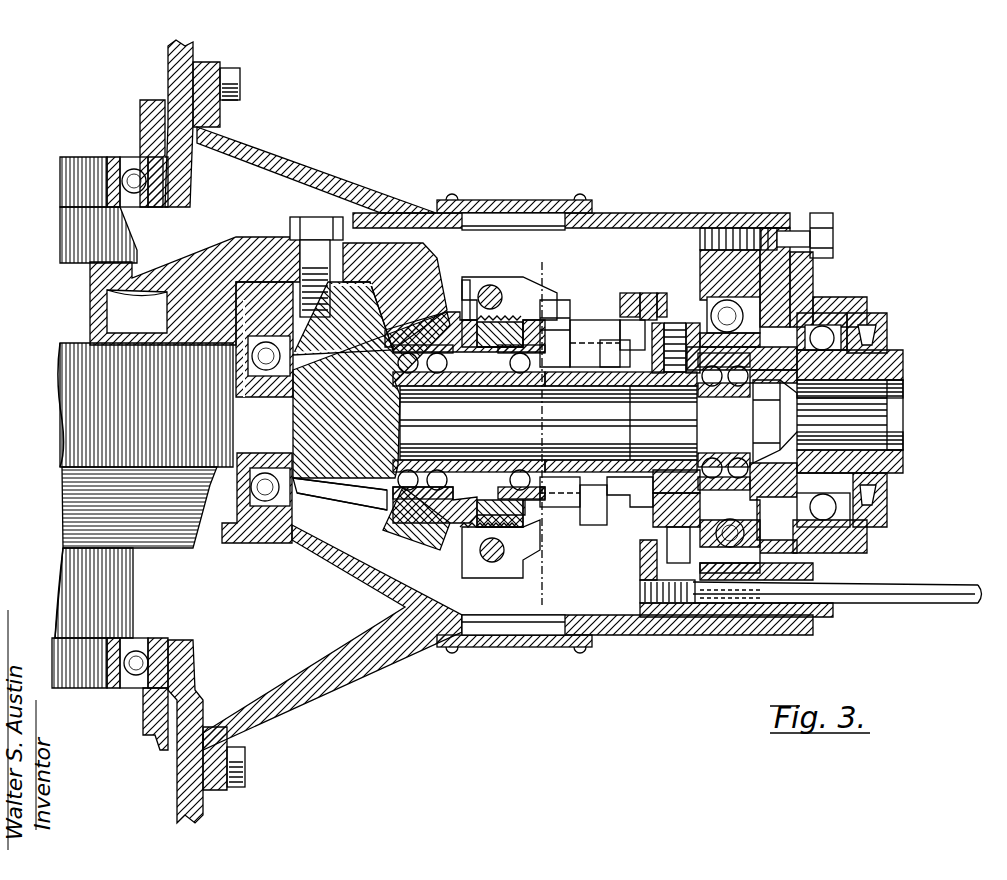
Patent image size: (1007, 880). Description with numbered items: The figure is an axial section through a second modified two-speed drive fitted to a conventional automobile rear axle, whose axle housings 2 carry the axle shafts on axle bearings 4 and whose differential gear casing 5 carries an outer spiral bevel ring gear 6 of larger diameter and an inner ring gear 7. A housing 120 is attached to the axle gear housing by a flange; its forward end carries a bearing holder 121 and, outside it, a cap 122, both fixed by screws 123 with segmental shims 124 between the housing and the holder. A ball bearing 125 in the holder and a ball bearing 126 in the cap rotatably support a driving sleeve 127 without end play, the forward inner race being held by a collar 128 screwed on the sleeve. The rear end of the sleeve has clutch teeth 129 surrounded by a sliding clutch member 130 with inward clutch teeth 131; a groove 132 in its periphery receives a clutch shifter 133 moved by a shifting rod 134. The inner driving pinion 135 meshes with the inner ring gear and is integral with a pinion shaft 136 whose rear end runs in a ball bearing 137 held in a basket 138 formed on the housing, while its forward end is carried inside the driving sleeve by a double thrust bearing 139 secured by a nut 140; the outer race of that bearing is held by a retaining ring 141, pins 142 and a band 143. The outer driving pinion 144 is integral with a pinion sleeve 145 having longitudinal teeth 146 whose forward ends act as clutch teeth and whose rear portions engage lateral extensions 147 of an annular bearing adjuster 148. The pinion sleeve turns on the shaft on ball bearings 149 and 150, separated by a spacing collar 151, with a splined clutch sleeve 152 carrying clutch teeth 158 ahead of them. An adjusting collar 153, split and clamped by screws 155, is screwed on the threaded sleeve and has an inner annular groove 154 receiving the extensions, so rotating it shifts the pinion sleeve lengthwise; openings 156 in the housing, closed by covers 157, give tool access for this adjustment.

The axle housing 2 is at (180, 88).
The axle bearing 4 is at (132, 168).
The differential gear casing 5 is at (78, 384).
The outer spiral bevel ring gear 6 is at (398, 246).
The inner spiral bevel ring gear 7 is at (352, 268).
The housing 120 is at (285, 140).
The bearing holder 121 is at (790, 278).
The cap 122 is at (816, 262).
The screws 123 is at (830, 232).
The shims 124 is at (762, 228).
The ball bearing 125 is at (730, 320).
The ball bearing 126 is at (852, 340).
The driving sleeve 127 is at (905, 376).
The collar 128 is at (900, 356).
The clutch teeth 129 is at (590, 525).
The sliding clutch member 130 is at (632, 318).
The clutch teeth 131 is at (612, 322).
The groove 132 is at (648, 292).
The clutch shifter 133 is at (660, 558).
The shifting rod 134 is at (905, 585).
The inner driving pinion 135 is at (350, 492).
The pinion shaft 136 is at (378, 496).
The ball bearing 137 is at (250, 540).
The basket 138 is at (280, 548).
The bearing 139 is at (740, 455).
The nut 140 is at (824, 421).
The retaining ring 141 is at (679, 545).
The pins 142 is at (668, 320).
The band 143 is at (665, 300).
The outer spiral bevel driving pinion 144 is at (418, 540).
The pinion sleeve 145 is at (462, 523).
The teeth 146 is at (556, 522).
The lateral extensions 147 is at (516, 296).
The bearing adjuster 148 is at (462, 290).
The ball bearing 149 is at (427, 377).
The ball bearing 150 is at (516, 375).
The spacing collar 151 is at (498, 388).
The clutch sleeve 152 is at (564, 388).
The adjusting collar 153 is at (510, 601).
The inner annular groove 154 is at (560, 300).
The screws 155 is at (460, 310).
The openings 156 is at (543, 216).
The covers 157 is at (470, 200).
The clutch teeth 158 is at (615, 353).